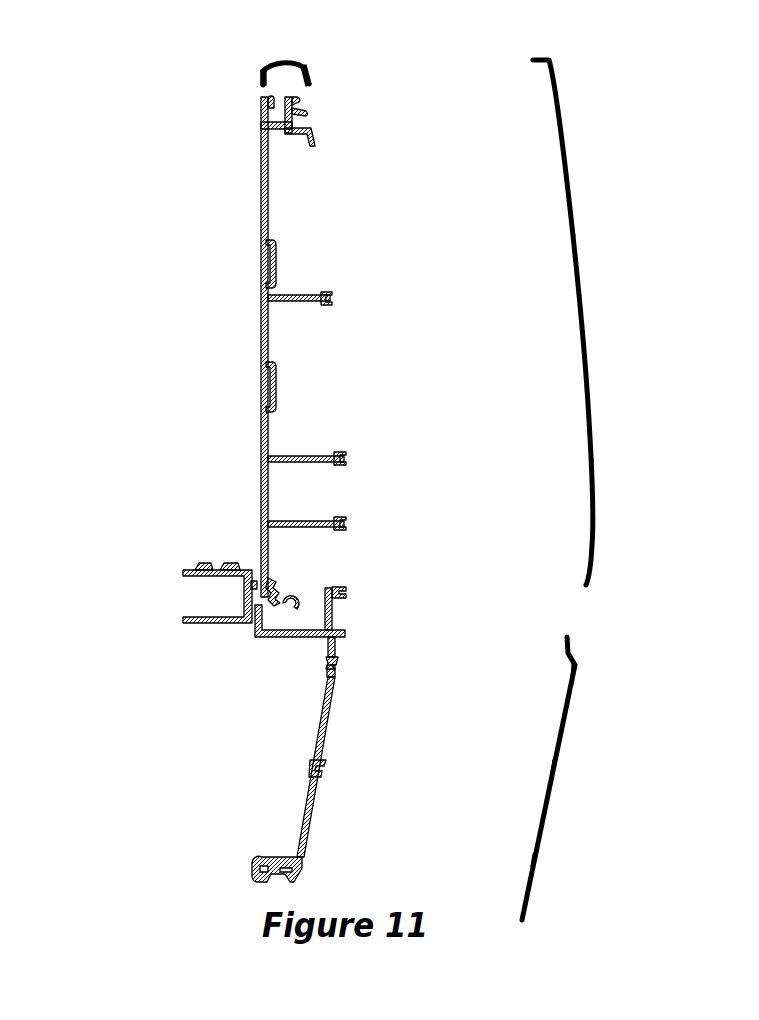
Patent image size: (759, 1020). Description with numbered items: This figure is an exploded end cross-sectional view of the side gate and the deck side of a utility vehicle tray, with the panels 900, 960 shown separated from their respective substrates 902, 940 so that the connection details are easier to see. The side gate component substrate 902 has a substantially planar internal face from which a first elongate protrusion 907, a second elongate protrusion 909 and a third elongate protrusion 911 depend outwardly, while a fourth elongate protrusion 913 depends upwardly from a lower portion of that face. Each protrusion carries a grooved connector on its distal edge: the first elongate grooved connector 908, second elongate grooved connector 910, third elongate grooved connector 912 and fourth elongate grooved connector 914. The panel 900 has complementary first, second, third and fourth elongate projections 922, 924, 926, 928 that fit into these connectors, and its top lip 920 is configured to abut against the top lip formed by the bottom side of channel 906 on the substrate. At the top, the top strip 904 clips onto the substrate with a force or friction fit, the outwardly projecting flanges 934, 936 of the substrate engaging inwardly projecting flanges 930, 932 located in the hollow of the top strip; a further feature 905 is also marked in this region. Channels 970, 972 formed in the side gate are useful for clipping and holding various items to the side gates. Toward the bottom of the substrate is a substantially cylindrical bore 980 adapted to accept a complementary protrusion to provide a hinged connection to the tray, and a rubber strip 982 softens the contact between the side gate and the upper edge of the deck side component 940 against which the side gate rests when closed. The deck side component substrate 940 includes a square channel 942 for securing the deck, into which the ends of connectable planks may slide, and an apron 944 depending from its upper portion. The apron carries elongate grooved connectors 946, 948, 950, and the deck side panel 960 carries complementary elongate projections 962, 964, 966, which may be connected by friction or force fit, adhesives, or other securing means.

The panel 900 is at (640, 314).
The side gate component substrate 902 is at (150, 215).
The top strip 904 is at (278, 59).
The upper channel 905 is at (293, 141).
The channel 906 is at (322, 120).
The first elongate protrusion 907 is at (296, 295).
The first elongate grooved connector 908 is at (346, 297).
The second elongate protrusion 909 is at (308, 457).
The second elongate grooved connector 910 is at (358, 458).
The third elongate protrusion 911 is at (308, 522).
The third elongate grooved connector 912 is at (358, 522).
The fourth elongate protrusion 913 is at (348, 617).
The fourth elongate grooved connector 914 is at (362, 593).
The top lip 920 is at (549, 59).
The first elongate projection 922 is at (573, 230).
The second elongate projection 924 is at (586, 390).
The third elongate projection 926 is at (590, 455).
The fourth elongate projection 928 is at (592, 520).
The inwardly projecting flange 930 is at (263, 69).
The inwardly projecting flange 932 is at (302, 78).
The outwardly projecting flange 934 is at (252, 104).
The outwardly projecting flange 936 is at (315, 101).
The deck side component substrate 940 is at (268, 678).
The square channel 942 is at (183, 597).
The apron 944 is at (272, 797).
The elongate grooved connector 946 is at (352, 676).
The elongate grooved connector 948 is at (340, 773).
The elongate grooved connector 950 is at (317, 868).
The deck side panel 960 is at (624, 788).
The elongate projection 962 is at (565, 670).
The elongate projection 964 is at (553, 766).
The elongate projection 966 is at (531, 860).
The channel 970 is at (250, 260).
The channel 972 is at (250, 385).
The substantially cylindrical bore 980 is at (281, 620).
The rubber strip 982 is at (266, 566).